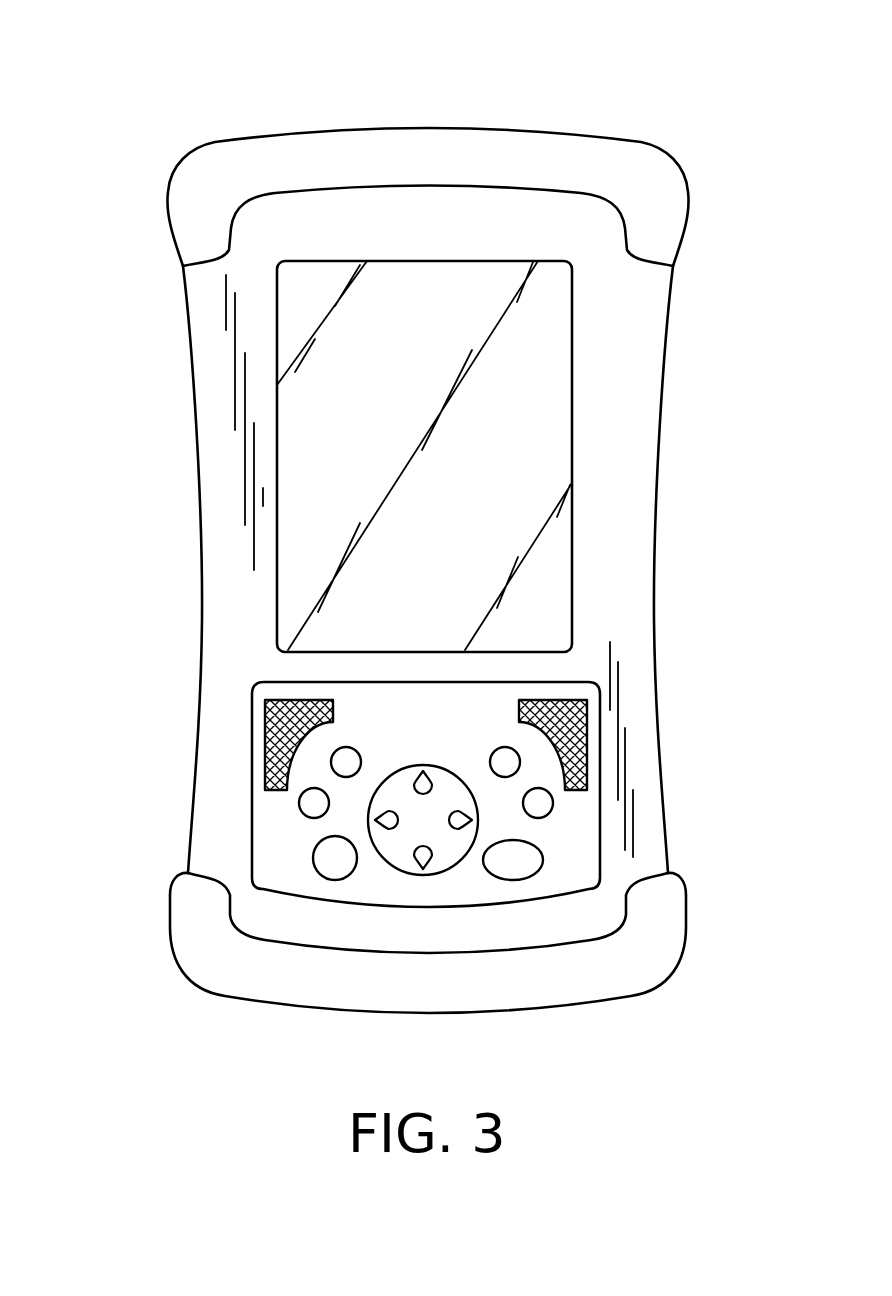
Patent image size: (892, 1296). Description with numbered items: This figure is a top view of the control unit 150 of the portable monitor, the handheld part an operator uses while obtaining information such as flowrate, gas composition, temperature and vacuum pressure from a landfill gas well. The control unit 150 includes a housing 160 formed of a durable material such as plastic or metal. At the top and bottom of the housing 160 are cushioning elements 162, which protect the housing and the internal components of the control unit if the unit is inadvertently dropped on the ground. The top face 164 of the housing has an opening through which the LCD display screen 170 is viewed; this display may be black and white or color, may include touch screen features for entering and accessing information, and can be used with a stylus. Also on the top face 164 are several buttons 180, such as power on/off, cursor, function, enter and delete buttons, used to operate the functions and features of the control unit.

The control unit 150 is at (164, 104).
The housing 160 is at (178, 386).
The cushioning elements 162 is at (452, 142).
The top face 164 is at (607, 488).
The LCD display screen 170 is at (542, 378).
The buttons 180 is at (510, 762).